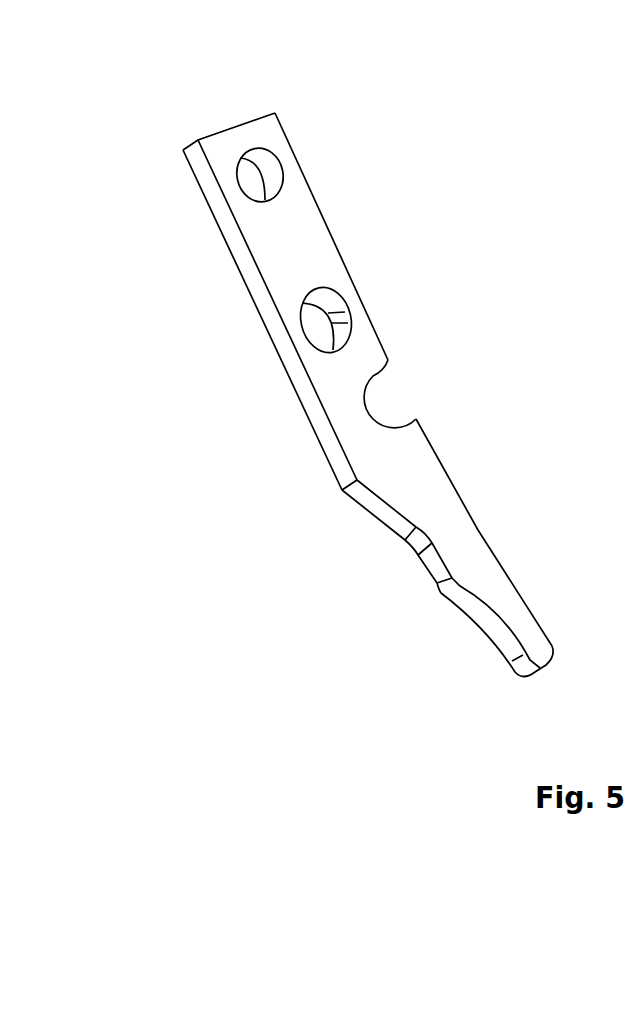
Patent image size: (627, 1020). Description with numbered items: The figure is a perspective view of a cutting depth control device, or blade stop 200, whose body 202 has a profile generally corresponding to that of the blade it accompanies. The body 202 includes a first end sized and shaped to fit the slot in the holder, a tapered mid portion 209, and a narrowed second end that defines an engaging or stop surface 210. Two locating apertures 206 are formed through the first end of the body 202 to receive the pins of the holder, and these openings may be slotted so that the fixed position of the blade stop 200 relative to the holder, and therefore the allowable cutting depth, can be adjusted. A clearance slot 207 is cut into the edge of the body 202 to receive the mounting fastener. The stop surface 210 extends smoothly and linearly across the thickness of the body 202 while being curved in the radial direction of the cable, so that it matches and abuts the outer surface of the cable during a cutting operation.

The blade stop 200 is at (457, 70).
The body 202 is at (340, 418).
The locating apertures 206 is at (257, 156).
The clearance slot 207 is at (402, 399).
The tapered mid portion 209 is at (425, 500).
The stop surface 210 is at (502, 630).